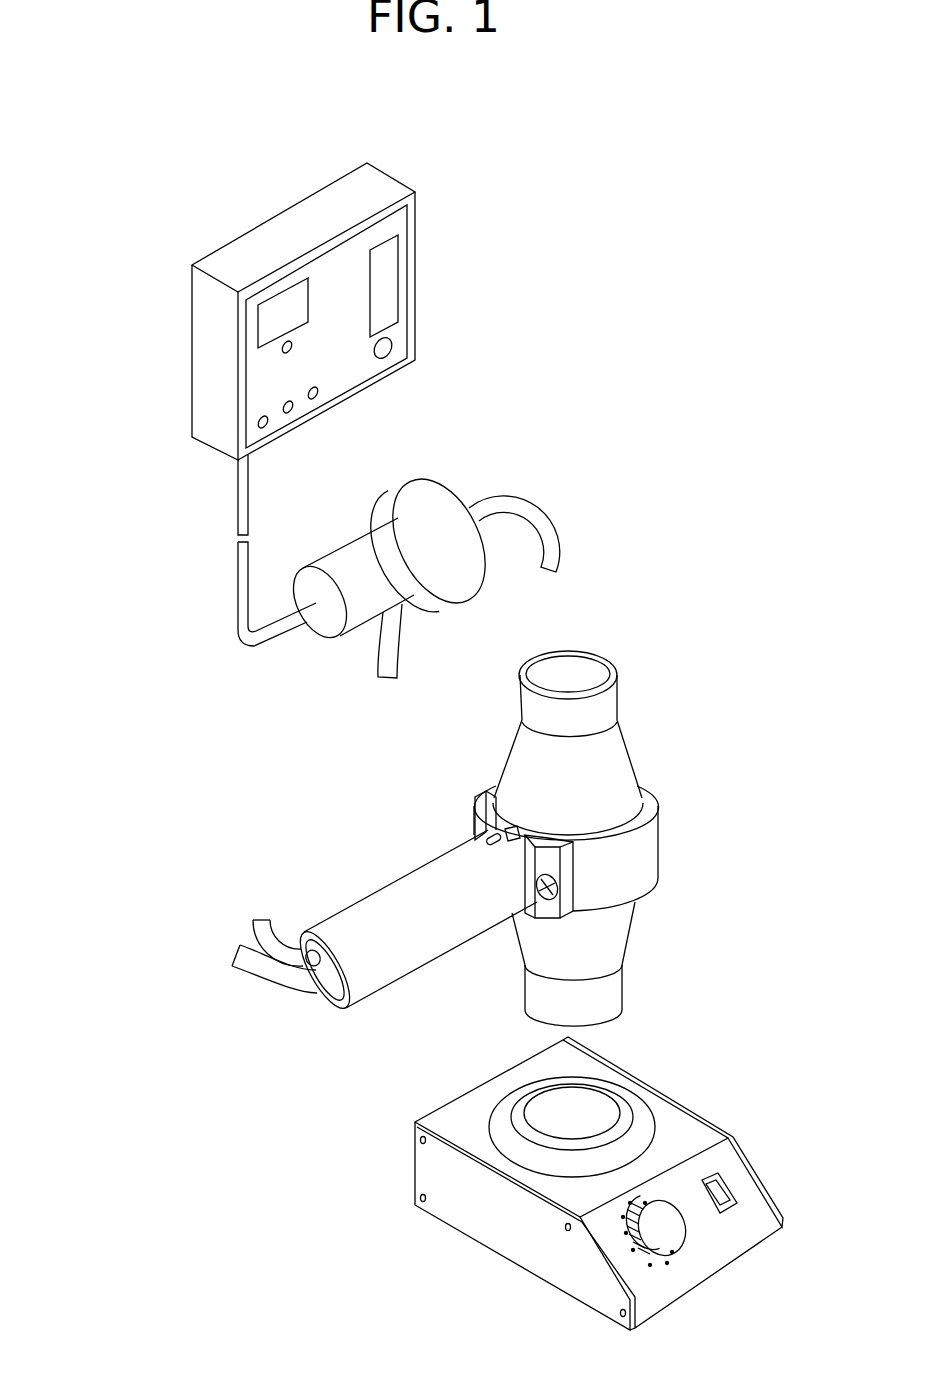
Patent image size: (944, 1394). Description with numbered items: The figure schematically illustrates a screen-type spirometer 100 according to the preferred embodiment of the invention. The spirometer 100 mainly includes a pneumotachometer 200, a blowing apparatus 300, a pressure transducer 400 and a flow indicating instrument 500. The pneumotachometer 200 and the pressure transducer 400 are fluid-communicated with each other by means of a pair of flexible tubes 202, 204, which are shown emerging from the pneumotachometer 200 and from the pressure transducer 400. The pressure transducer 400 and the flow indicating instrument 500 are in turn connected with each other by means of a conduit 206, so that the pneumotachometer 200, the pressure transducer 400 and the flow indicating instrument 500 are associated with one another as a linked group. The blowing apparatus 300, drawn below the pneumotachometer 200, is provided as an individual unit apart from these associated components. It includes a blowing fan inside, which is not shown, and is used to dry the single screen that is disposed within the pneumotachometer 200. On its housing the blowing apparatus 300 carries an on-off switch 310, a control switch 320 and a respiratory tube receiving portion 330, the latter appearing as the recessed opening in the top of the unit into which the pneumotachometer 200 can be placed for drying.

The screen-type spirometer 100 is at (598, 123).
The pneumotachometer 200 is at (633, 735).
The flexible tube 202 is at (533, 517).
The flexible tube 204 is at (382, 656).
The conduit 206 is at (240, 515).
The blowing apparatus 300 is at (693, 1108).
The on-off switch 310 is at (718, 1177).
The control switch 320 is at (633, 1252).
The respiratory tube receiving portion 330 is at (597, 1102).
The pressure transducer 400 is at (457, 477).
The flow indicating instrument 500 is at (190, 260).